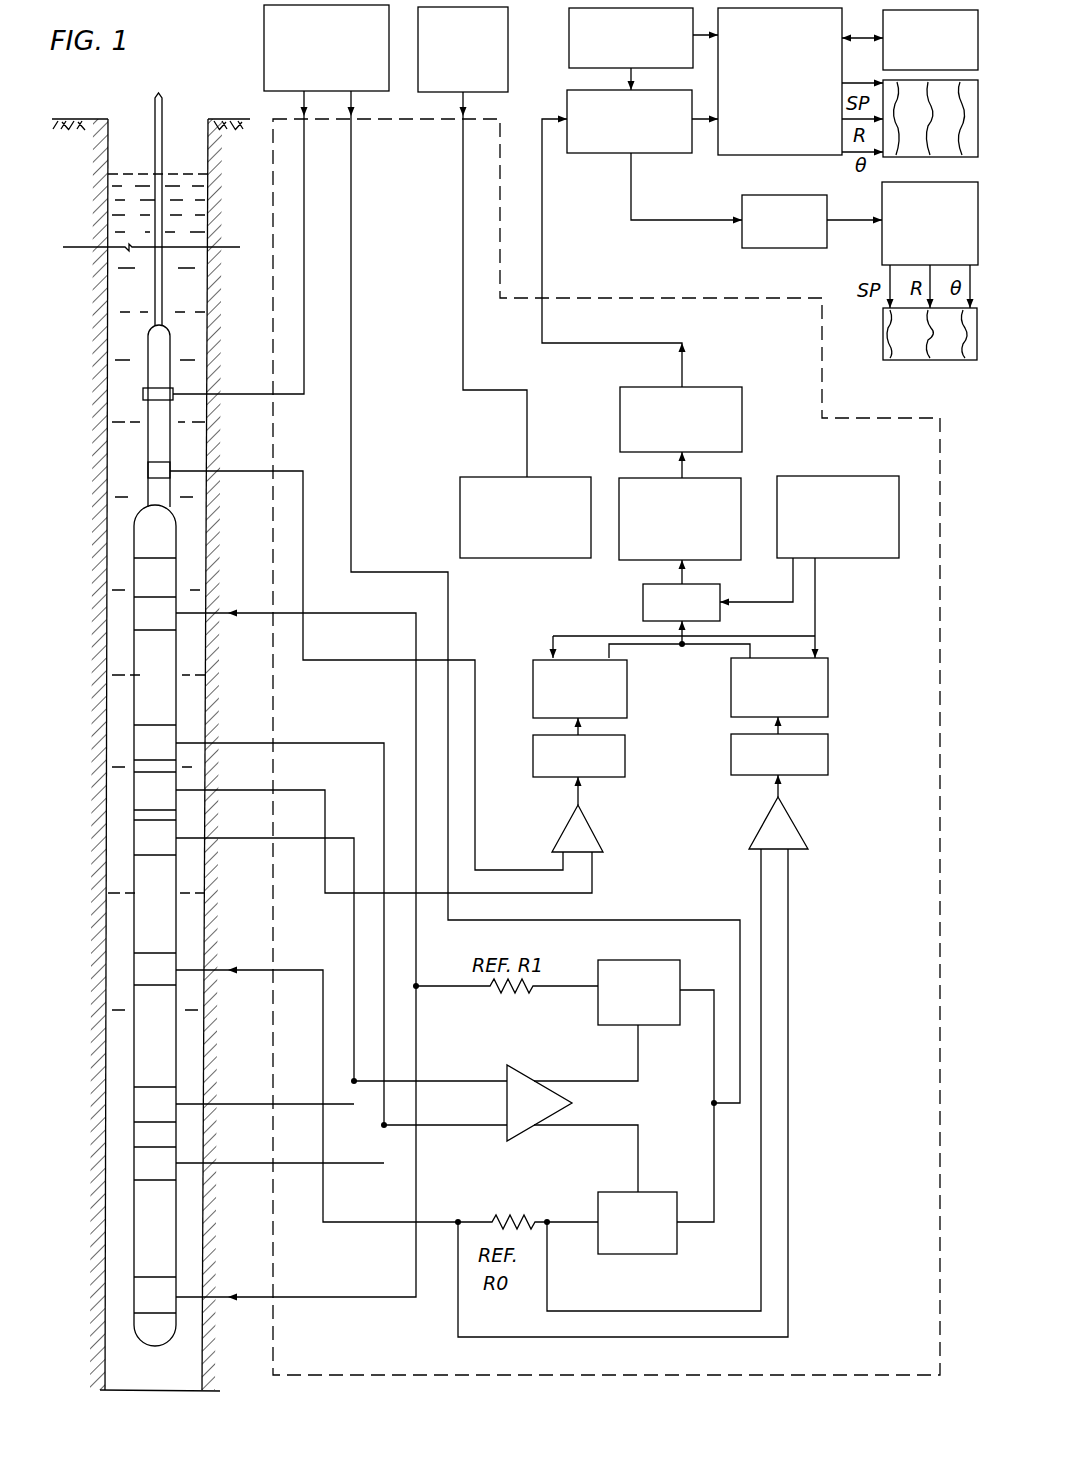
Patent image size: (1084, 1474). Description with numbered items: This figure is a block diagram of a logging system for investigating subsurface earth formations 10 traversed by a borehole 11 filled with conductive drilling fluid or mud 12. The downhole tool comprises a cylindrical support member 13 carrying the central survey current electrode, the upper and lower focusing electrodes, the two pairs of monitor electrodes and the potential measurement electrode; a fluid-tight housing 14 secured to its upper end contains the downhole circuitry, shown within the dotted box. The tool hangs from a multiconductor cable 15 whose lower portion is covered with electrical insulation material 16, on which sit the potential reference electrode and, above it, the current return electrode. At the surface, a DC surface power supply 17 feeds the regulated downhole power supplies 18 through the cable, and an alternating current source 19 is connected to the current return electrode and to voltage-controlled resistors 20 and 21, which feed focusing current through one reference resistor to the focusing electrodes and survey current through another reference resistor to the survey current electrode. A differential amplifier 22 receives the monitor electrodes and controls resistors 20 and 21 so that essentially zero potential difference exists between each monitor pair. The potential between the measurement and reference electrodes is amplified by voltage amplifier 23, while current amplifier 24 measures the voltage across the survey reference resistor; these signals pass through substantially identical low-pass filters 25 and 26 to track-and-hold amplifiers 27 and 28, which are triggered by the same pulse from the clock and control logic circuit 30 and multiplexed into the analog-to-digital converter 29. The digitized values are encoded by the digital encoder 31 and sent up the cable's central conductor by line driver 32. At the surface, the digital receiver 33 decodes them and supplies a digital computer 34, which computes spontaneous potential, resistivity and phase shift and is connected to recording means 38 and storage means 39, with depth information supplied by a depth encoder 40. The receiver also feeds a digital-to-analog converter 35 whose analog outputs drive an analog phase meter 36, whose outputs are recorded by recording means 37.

The subsurface earth formations 10 is at (75, 812).
The borehole 11 is at (115, 650).
The conductive drilling fluid or mud 12 is at (108, 281).
The cylindrical support or housing member 13 is at (142, 905).
The cylindrical fluid-tight housing 14 is at (152, 585).
The multiconductor cable 15 is at (163, 283).
The electrical insulation material 16 is at (153, 428).
The surface power supply 17 is at (510, 42).
The regulated downhole power supplies 18 is at (483, 477).
The alternating current source 19 is at (264, 40).
The voltage-controlled resistor 20 is at (660, 1025).
The voltage-controlled resistor 21 is at (668, 1192).
The differential amplifier 22 is at (527, 1068).
The voltage amplifier 23 is at (603, 835).
The current amplifier 24 is at (800, 832).
The low-pass filter 25 is at (626, 756).
The low-pass filter 26 is at (828, 756).
The track-and-hold amplifier 27 is at (628, 698).
The track-and-hold amplifier 28 is at (828, 690).
The analog-to-digital converter 29 is at (643, 602).
The clock and control logic circuit 30 is at (820, 476).
The digital encoder 31 is at (628, 478).
The line driver 32 is at (745, 403).
The digital receiver 33 is at (591, 155).
The digital computer 34 is at (722, 157).
The digital-to-analog converter 35 is at (778, 248).
The analog phase meter 36 is at (882, 257).
The recording means 37 is at (917, 362).
The recording means 38 is at (893, 158).
The storage means 39 is at (883, 60).
The depth encoder 40 is at (569, 62).